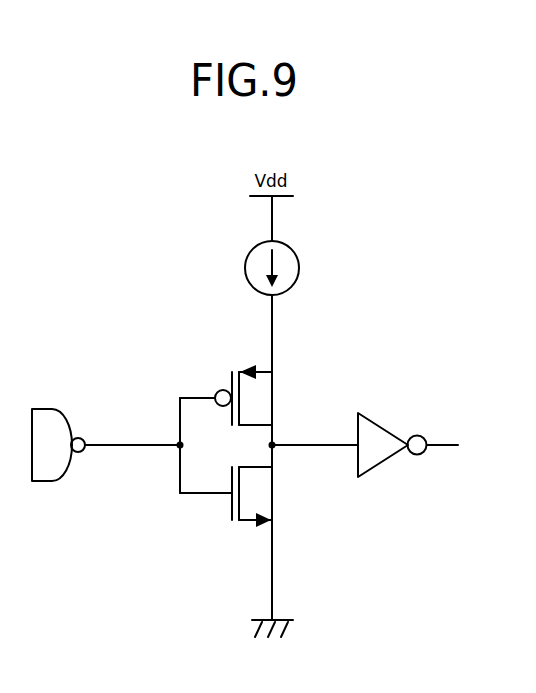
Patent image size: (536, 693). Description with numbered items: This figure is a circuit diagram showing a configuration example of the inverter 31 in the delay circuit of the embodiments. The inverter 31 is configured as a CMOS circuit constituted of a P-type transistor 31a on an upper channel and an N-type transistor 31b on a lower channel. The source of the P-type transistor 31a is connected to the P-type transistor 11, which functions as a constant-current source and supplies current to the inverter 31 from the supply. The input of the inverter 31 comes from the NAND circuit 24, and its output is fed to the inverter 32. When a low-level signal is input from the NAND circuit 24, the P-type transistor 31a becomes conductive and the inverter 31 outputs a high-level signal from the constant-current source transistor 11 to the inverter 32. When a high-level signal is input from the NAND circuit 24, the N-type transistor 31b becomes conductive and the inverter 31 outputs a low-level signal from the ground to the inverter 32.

The P-type transistor 11 is at (248, 257).
The inverter 31 is at (210, 438).
The P-type transistor 31a is at (231, 376).
The N-type transistor 31b is at (231, 516).
The NAND circuit 24 is at (53, 482).
The inverter 32 is at (370, 472).